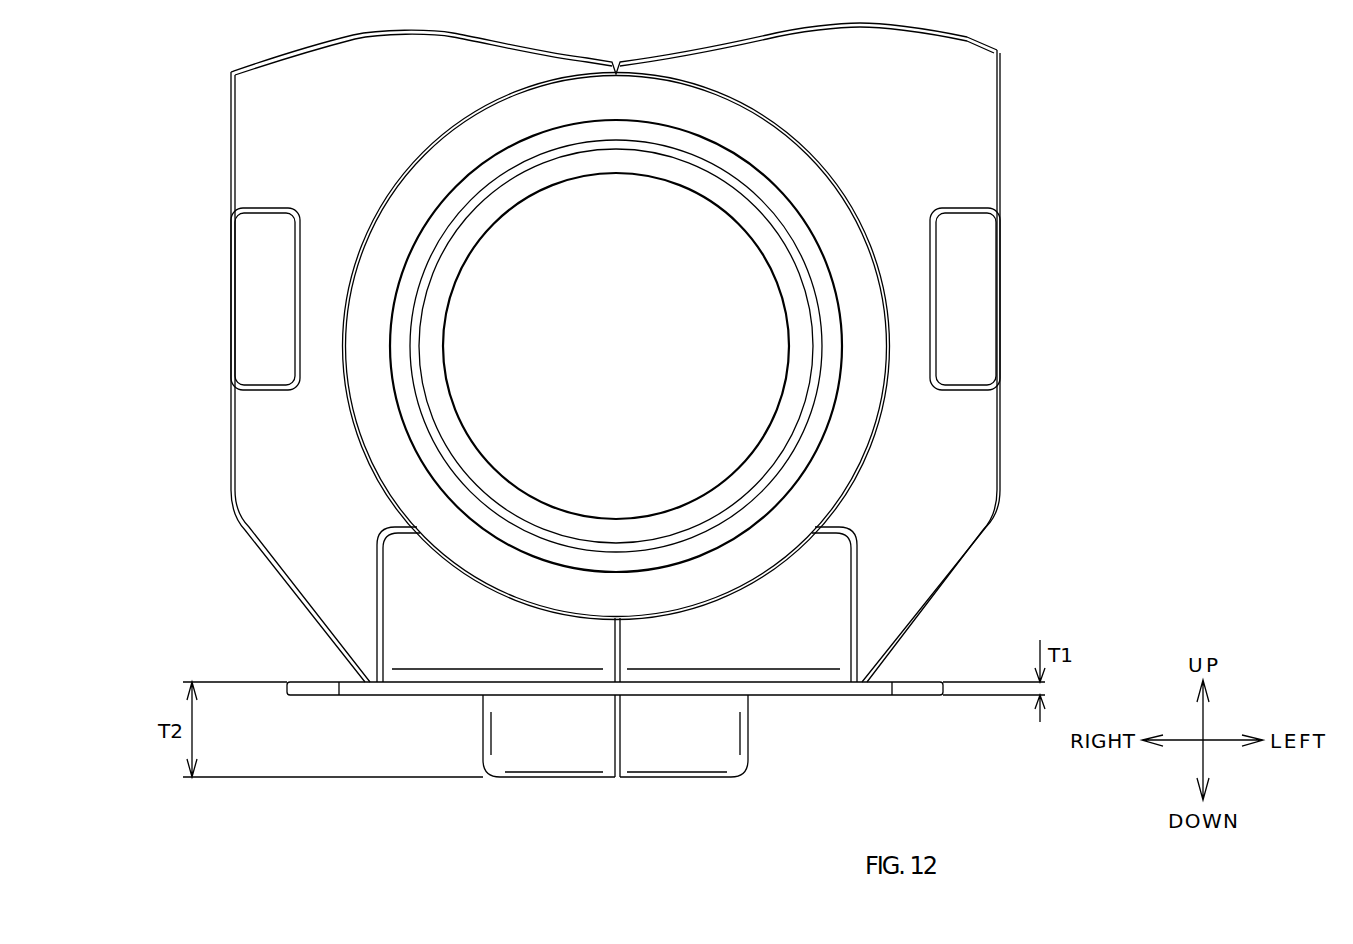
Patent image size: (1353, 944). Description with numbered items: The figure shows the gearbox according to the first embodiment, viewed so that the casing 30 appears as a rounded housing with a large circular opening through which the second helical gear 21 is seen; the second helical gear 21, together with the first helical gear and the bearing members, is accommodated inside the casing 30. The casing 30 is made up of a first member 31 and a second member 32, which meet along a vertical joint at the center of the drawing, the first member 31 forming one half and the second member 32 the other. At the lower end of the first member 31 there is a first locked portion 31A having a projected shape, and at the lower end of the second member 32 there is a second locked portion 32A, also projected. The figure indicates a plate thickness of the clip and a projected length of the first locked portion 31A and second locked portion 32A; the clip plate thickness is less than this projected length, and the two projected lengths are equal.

The casing 30 is at (618, 437).
The first member 31 is at (270, 467).
The second member 32 is at (960, 465).
The second helical gear 21 is at (825, 383).
The first locked portion 31A is at (562, 763).
The second locked portion 32A is at (685, 763).